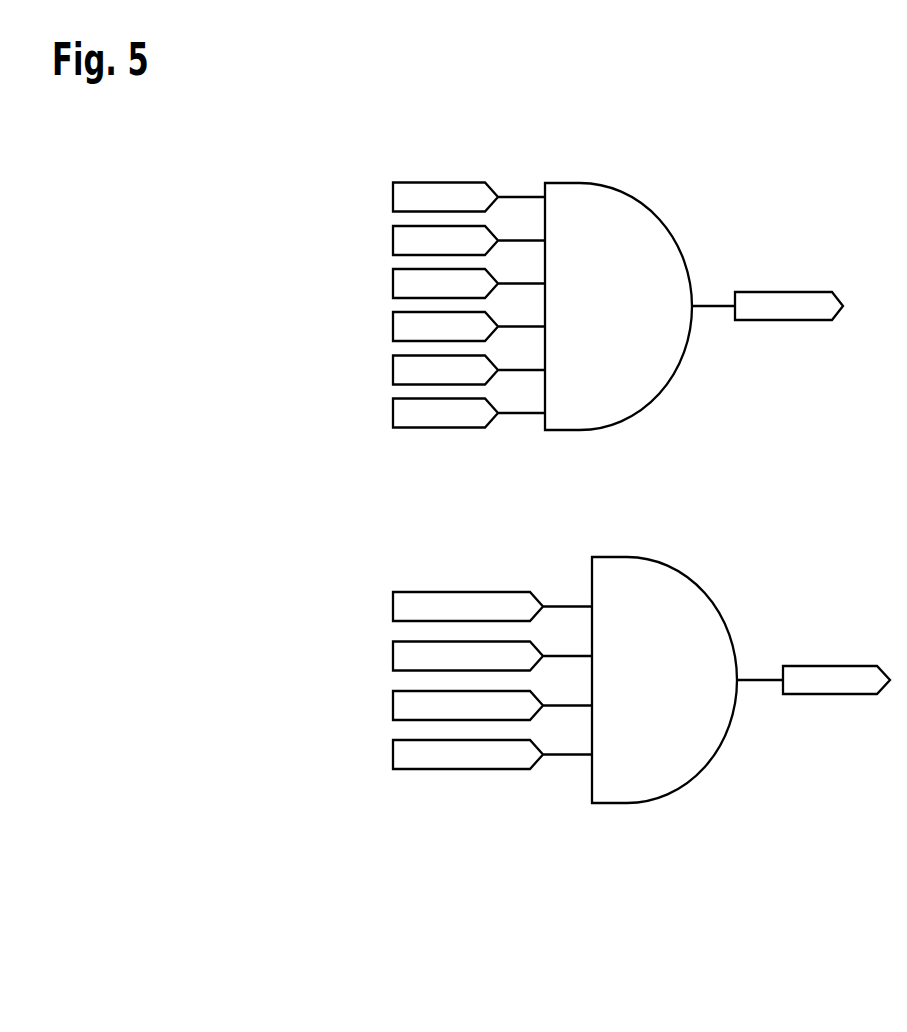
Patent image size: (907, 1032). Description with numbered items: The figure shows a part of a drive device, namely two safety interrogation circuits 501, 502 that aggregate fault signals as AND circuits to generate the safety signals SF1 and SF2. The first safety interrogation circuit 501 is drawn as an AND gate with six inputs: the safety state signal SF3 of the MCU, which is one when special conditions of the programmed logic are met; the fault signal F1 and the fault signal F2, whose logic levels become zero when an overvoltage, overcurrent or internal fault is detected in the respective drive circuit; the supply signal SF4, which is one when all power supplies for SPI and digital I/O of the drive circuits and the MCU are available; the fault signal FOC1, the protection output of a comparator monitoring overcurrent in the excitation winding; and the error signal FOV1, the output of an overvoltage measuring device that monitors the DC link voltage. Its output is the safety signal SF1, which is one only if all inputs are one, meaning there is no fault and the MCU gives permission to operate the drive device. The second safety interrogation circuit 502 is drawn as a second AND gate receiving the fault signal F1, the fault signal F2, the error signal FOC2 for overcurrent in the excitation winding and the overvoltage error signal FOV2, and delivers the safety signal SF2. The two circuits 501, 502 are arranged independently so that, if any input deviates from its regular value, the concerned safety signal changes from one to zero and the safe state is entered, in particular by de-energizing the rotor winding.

The first safety interrogation circuit 501 is at (582, 183).
The second safety interrogation circuit 502 is at (629, 557).
The safety signal SF1 is at (794, 292).
The safety signal SF2 is at (841, 667).
The safety state signal of the MCU SF3 is at (393, 196).
The supply signal SF4 is at (393, 326).
The fault signal F1 is at (393, 240).
The fault signal F2 is at (393, 282).
The fault signal (overcurrent in the excitation winding) FOC1 is at (393, 369).
The error signal (overcurrent in the excitation winding) FOC2 is at (393, 704).
The error signal (overvoltage) FOV1 is at (393, 412).
The error signal (overvoltage) FOV2 is at (393, 754).